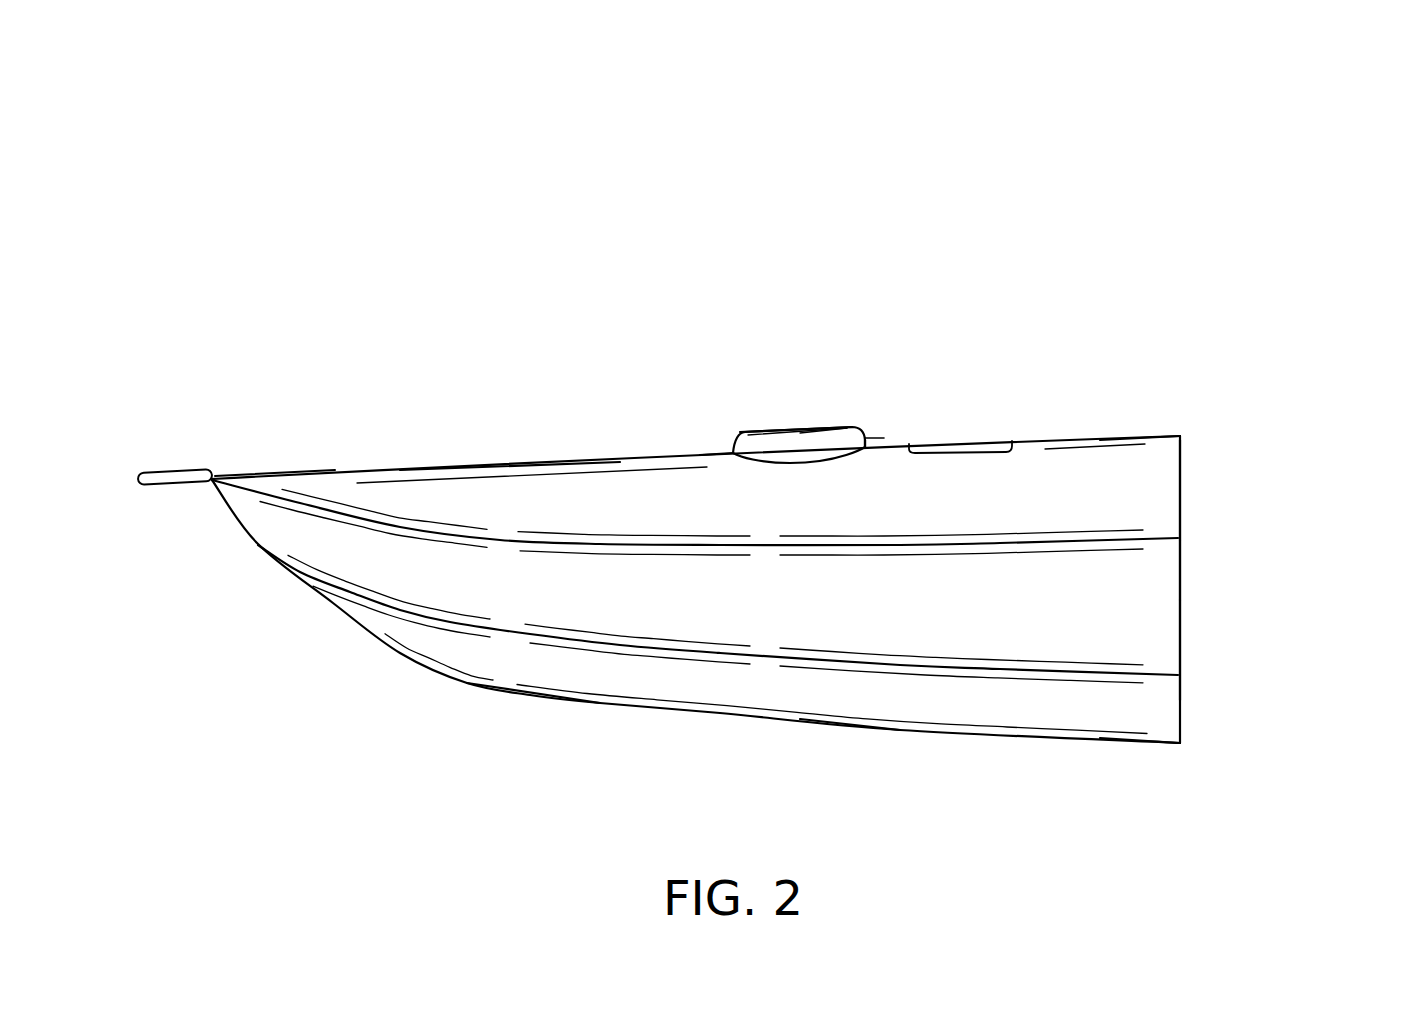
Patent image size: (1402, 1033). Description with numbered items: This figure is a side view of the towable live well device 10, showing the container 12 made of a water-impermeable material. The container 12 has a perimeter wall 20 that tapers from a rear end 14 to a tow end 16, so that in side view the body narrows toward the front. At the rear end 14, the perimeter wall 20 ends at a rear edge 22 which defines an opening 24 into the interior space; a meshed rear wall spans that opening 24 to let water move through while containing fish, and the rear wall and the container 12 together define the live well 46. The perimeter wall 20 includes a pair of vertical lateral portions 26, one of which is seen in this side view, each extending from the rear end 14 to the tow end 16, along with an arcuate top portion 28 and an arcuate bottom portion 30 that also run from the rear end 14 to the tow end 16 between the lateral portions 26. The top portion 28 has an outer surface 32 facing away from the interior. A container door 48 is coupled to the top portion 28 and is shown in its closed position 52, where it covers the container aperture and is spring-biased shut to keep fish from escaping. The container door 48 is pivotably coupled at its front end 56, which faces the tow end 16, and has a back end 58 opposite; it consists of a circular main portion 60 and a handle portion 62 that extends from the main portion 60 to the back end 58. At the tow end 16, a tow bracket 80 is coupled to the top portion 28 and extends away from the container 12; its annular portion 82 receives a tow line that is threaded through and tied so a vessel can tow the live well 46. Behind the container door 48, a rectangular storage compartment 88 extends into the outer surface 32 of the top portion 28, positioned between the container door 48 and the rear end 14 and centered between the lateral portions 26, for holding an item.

The towable live well device 10 is at (1050, 155).
The container 12 is at (998, 712).
The rear end 14 is at (1180, 508).
The tow end 16 is at (212, 484).
The perimeter wall 20 is at (545, 663).
The rear edge 22 is at (1180, 457).
The opening 24 is at (1212, 568).
The lateral portions 26 is at (1162, 641).
The top portion 28 is at (1081, 449).
The bottom portion 30 is at (1148, 718).
The outer surface 32 is at (597, 478).
The live well 46 is at (876, 806).
The container door 48 is at (782, 438).
The closed position 52 is at (742, 404).
The front end 56 is at (733, 452).
The back end 58 is at (877, 445).
The main portion 60 is at (823, 433).
The handle portion 62 is at (887, 437).
The tow bracket 80 is at (218, 476).
The annular portion 82 is at (174, 476).
The storage compartment 88 is at (972, 430).